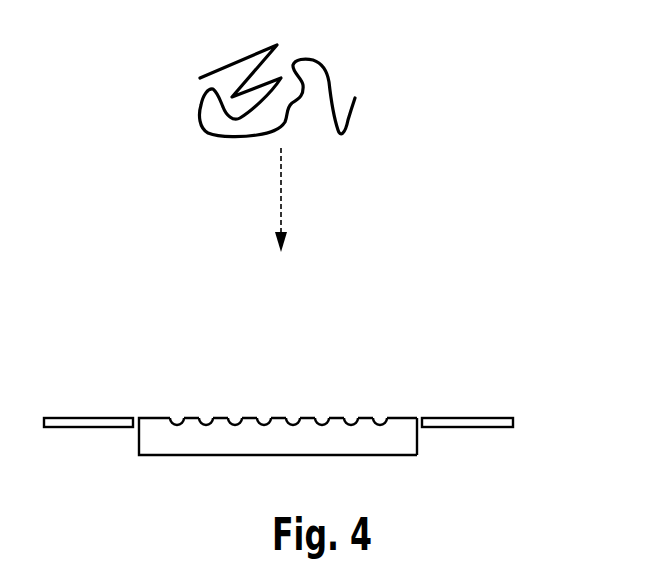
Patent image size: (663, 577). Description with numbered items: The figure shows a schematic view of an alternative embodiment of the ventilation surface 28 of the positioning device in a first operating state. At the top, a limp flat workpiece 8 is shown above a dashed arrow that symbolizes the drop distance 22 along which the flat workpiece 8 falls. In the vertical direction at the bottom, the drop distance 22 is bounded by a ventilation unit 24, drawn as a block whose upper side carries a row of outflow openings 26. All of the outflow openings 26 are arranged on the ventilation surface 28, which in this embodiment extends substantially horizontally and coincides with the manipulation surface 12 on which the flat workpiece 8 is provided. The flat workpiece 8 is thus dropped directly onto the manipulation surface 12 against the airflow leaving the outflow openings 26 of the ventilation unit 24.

The flat workpiece 8 is at (327, 72).
The drop distance 22 is at (281, 193).
The ventilation unit 24 is at (428, 450).
The outflow openings 26 is at (178, 417).
The manipulation surface 12 is at (421, 410).
The ventilation surface 28 is at (192, 399).